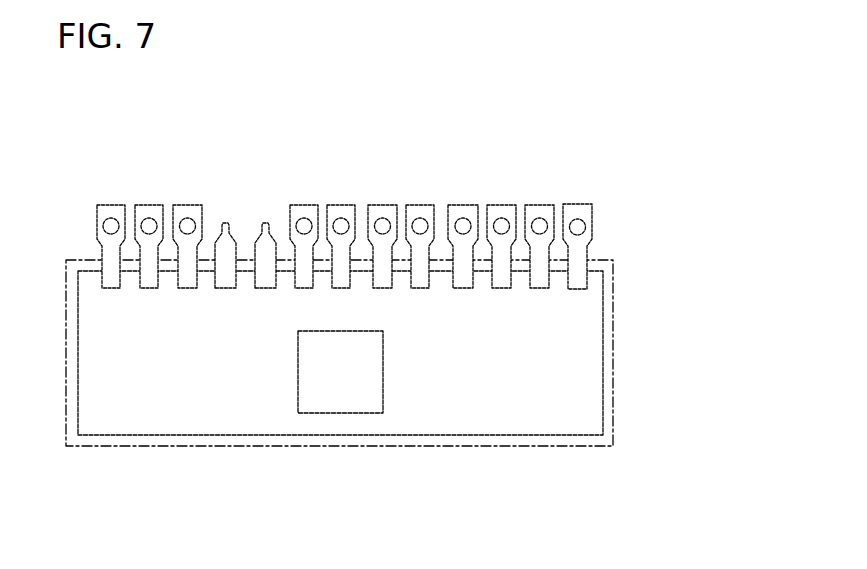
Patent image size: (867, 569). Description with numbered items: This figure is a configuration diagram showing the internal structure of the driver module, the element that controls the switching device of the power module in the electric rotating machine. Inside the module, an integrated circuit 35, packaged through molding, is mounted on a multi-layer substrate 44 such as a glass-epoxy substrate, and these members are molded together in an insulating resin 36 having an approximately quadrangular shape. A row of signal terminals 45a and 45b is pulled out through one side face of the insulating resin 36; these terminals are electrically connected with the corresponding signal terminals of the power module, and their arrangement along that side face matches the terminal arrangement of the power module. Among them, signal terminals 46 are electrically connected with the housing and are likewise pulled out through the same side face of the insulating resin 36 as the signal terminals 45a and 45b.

The integrated circuit 35 is at (342, 359).
The insulating resin 36 is at (613, 350).
The multi-layer substrate 44 is at (543, 343).
The signal terminals 45a is at (199, 183).
The signal terminals 45b is at (580, 205).
The signal terminals 46 is at (282, 218).